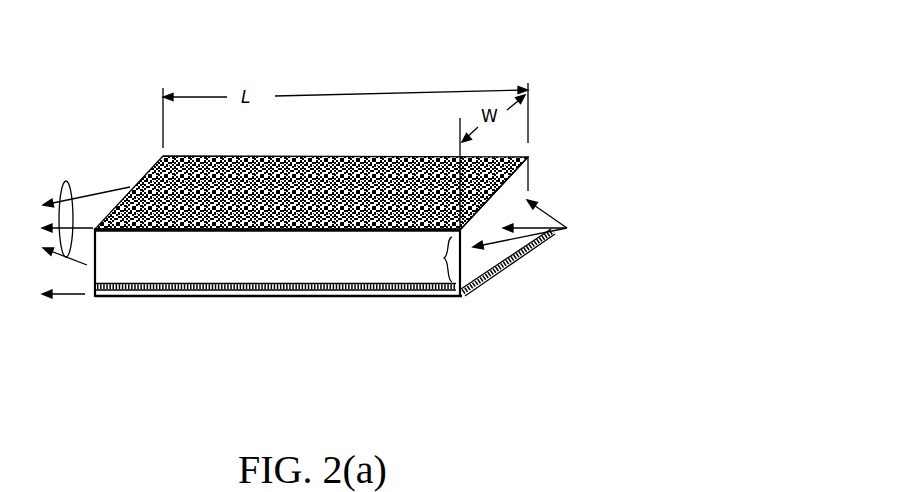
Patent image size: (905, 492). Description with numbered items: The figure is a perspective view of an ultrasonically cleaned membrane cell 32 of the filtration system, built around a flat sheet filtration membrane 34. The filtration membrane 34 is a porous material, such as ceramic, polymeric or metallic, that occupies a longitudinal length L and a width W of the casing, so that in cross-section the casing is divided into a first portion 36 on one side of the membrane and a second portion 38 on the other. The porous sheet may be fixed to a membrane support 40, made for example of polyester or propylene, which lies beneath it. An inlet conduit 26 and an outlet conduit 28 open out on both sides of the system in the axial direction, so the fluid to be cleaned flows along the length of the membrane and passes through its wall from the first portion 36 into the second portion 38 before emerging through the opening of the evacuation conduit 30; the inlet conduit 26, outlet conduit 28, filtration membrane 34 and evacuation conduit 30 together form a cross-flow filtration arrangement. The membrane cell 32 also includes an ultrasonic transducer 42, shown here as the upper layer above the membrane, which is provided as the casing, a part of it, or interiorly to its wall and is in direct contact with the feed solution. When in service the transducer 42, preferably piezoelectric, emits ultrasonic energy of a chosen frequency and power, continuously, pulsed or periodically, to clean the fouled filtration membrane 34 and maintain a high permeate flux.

The inlet conduit 26 is at (539, 224).
The outlet conduit 28 is at (86, 208).
The evacuation conduit 30 is at (70, 295).
The membrane cell 32 is at (542, 66).
The filtration membrane 34 is at (442, 292).
The first portion 36 is at (437, 259).
The second portion 38 is at (468, 283).
The membrane support 40 is at (420, 292).
The ultrasonic transducer 42 is at (318, 156).